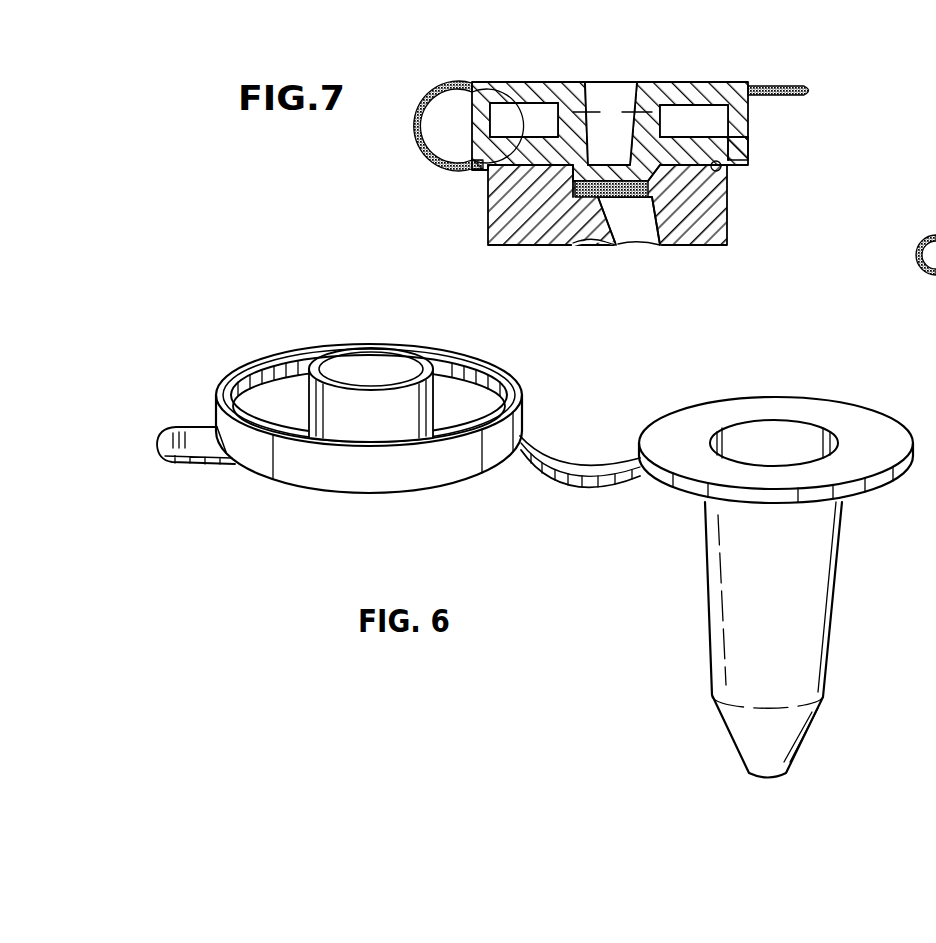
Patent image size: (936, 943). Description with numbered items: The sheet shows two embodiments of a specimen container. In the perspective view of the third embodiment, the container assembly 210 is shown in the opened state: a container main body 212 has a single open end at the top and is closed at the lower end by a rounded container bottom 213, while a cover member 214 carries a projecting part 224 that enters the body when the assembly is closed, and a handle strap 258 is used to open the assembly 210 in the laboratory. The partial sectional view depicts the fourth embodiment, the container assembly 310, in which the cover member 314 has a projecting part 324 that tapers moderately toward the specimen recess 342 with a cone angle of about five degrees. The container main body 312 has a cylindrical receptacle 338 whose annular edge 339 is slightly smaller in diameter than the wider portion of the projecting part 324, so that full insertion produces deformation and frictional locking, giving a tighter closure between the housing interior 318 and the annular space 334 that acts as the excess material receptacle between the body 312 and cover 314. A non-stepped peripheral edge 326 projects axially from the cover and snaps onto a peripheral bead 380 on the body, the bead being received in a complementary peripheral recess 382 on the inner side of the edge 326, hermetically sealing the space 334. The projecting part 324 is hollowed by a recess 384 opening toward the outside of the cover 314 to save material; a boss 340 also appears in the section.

In FIG. 6, the container assembly 210 is at (820, 342).
In FIG. 6, the container main body 212 is at (700, 615).
In FIG. 6, the rounded container bottom 213 is at (790, 744).
In FIG. 6, the cover member 214 is at (339, 338).
In FIG. 6, the projecting part 224 is at (430, 386).
In FIG. 6, the handle strap 258 is at (214, 449).
In FIG. 7, the container assembly 310 is at (924, 84).
In FIG. 7, the container main body 312 is at (736, 228).
In FIG. 7, the cover member 314 is at (570, 82).
In FIG. 7, the housing interior 318 is at (650, 236).
In FIG. 7, the projecting part 324 is at (664, 116).
In FIG. 7, the peripheral edge 326 is at (762, 98).
In FIG. 7, the annular space 334 is at (518, 118).
In FIG. 7, the receptacle 338 is at (568, 168).
In FIG. 7, the annular edge 339 is at (489, 120).
In FIG. 7, the boss 340 is at (576, 199).
In FIG. 7, the specimen recess 342 is at (606, 200).
In FIG. 7, the peripheral bead 380 is at (722, 167).
In FIG. 7, the peripheral recess 382 is at (737, 148).
In FIG. 7, the recess 384 is at (648, 62).